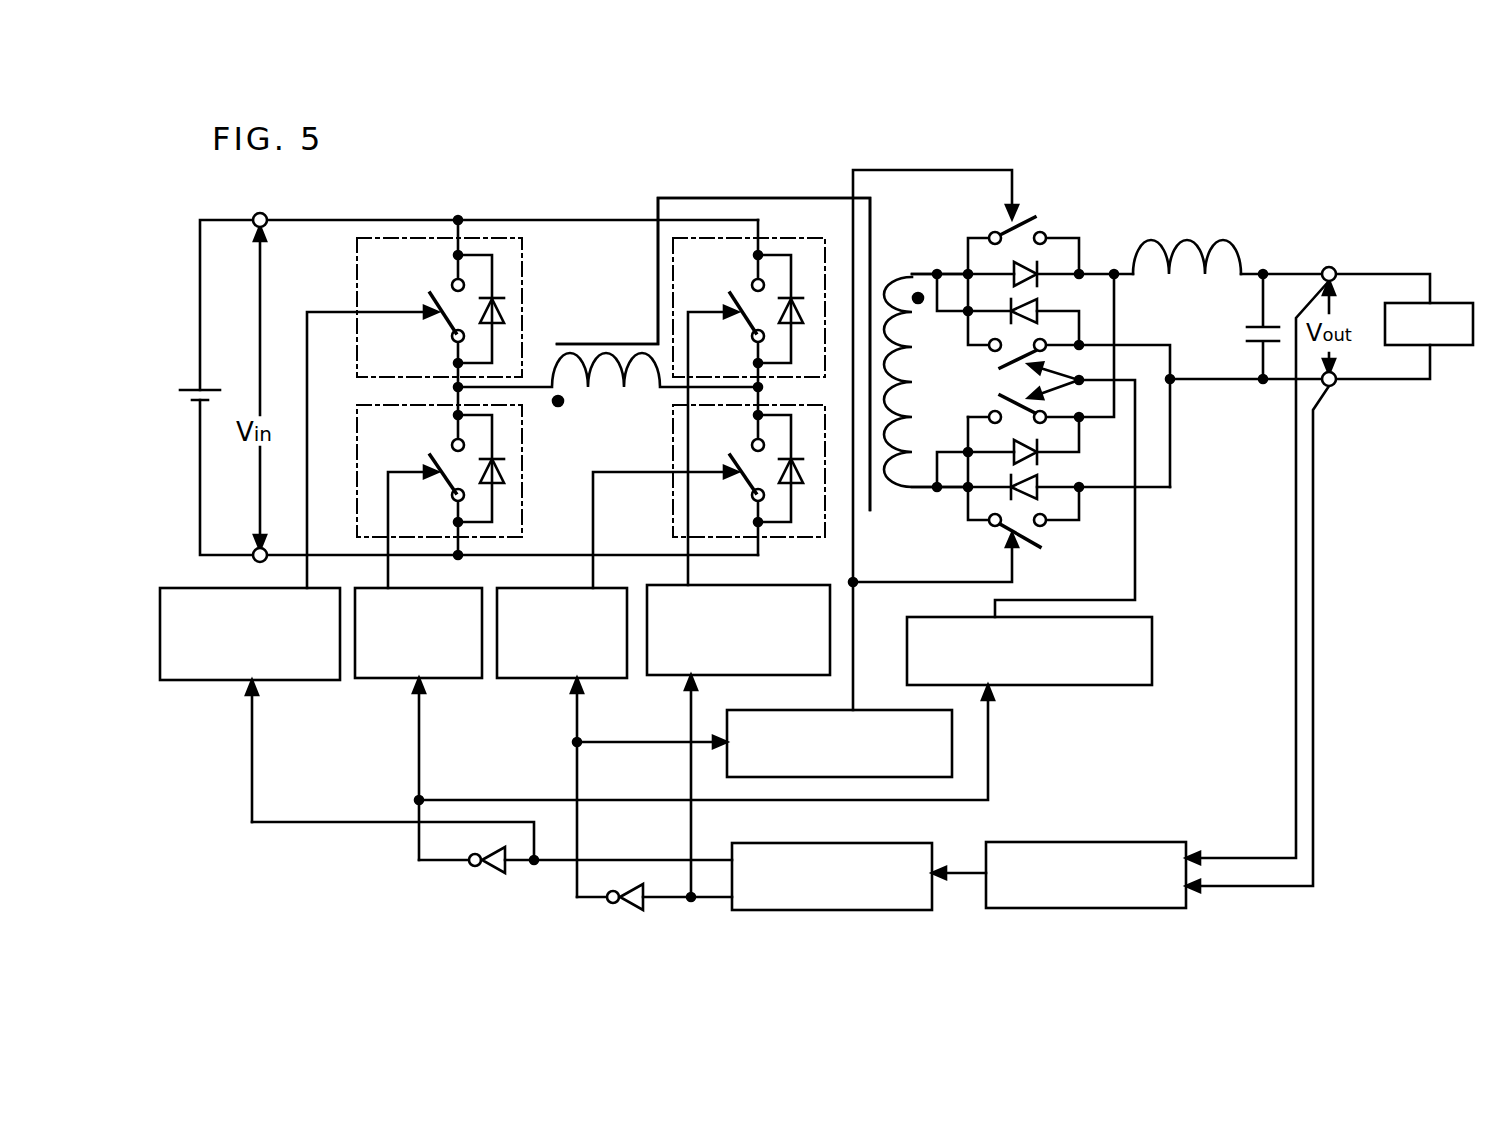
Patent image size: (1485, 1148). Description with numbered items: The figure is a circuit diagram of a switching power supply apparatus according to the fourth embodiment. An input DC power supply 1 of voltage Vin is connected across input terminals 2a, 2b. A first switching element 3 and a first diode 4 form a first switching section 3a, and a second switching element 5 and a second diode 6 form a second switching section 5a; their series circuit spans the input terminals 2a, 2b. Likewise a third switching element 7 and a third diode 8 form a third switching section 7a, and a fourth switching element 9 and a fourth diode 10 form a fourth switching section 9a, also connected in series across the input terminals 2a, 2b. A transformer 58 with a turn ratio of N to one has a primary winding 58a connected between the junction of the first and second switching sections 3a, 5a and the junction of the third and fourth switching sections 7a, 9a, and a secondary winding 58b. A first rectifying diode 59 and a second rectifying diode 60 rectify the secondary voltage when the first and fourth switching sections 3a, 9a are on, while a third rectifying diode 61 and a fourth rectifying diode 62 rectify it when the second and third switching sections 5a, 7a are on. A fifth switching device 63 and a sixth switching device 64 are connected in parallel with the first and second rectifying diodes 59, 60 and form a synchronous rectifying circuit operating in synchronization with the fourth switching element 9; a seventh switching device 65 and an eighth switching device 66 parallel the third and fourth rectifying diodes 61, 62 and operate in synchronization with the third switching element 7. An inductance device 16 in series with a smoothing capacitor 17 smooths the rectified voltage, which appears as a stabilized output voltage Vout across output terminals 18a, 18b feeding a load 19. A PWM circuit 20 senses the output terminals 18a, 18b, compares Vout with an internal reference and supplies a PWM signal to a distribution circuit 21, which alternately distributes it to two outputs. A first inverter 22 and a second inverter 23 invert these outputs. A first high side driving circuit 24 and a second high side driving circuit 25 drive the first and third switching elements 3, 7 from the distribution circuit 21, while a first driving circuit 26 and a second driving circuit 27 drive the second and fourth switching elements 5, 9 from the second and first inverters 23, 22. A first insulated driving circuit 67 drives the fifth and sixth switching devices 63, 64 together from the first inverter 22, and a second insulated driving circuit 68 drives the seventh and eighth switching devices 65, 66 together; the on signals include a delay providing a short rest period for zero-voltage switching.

The input DC power supply 1 is at (193, 386).
The input terminal 2a is at (267, 216).
The input terminal 2b is at (254, 551).
The first switching element 3 is at (442, 284).
The first switching section 3a is at (524, 266).
The first diode 4 is at (506, 310).
The second switching element 5 is at (442, 446).
The second switching section 5a is at (524, 440).
The second diode 6 is at (506, 476).
The third switching element 7 is at (752, 285).
The third switching section 7a is at (774, 239).
The third diode 8 is at (797, 300).
The fourth switching element 9 is at (752, 447).
The fourth switching section 9a is at (772, 540).
The fourth diode 10 is at (796, 442).
The inductance device 16 is at (1190, 240).
The smoothing capacitor 17 is at (1252, 330).
The output terminal 18a is at (1334, 268).
The output terminal 18b is at (1336, 386).
The load 19 is at (1442, 349).
The PWM circuit 20 is at (1098, 842).
The distribution circuit 21 is at (880, 843).
The first inverter 22 is at (622, 909).
The second inverter 23 is at (486, 873).
The first high side driving circuit 24 is at (210, 588).
The second high side driving circuit 25 is at (739, 570).
The first driving circuit 26 is at (419, 572).
The second driving circuit 27 is at (524, 572).
The transformer 58 is at (740, 198).
The primary winding 58a is at (608, 382).
The secondary winding 58b is at (905, 490).
The first rectifying diode 59 is at (1050, 266).
The second rectifying diode 60 is at (1040, 500).
The third rectifying diode 61 is at (1040, 462).
The fourth rectifying diode 62 is at (1040, 304).
The fifth switching device 63 is at (1035, 216).
The sixth switching device 64 is at (1046, 548).
The seventh switching device 65 is at (996, 404).
The eighth switching device 66 is at (996, 364).
The first insulated driving circuit 67 is at (880, 710).
The second insulated driving circuit 68 is at (1153, 637).